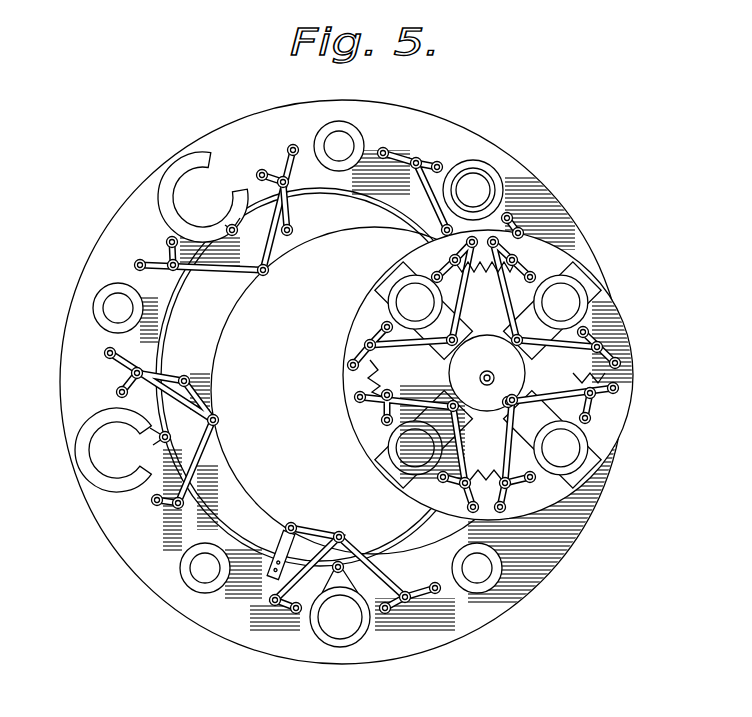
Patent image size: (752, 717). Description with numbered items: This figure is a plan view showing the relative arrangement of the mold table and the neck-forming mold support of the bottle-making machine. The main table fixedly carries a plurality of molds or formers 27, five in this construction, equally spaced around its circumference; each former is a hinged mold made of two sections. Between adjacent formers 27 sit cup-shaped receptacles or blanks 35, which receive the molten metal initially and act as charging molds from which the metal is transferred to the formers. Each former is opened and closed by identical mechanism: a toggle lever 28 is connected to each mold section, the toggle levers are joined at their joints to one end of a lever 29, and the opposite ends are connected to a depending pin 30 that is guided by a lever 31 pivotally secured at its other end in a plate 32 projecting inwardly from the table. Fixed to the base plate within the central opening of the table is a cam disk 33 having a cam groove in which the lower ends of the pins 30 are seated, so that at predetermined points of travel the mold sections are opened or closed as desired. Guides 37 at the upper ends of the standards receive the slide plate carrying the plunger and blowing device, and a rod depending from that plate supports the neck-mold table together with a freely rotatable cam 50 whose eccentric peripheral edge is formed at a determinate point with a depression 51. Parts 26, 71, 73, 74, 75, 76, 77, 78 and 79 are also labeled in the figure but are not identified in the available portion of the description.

The lever 26 is at (152, 263).
The mold (former) 27 is at (382, 672).
The toggle lever 28 is at (288, 148).
The lever 29 is at (249, 268).
The pin 30 is at (374, 390).
The lever 31 is at (282, 254).
The plate 32 is at (300, 215).
The cam disk 33 is at (193, 386).
The blank 35 is at (338, 122).
The guides 37 is at (212, 404).
The cam 50 is at (487, 373).
The depression 51 is at (492, 367).
The spring 71 is at (490, 419).
The link 73 is at (330, 245).
The disc 74 is at (612, 332).
The link 75 is at (385, 405).
The link 76 is at (394, 378).
The link 77 is at (390, 298).
The link 78 is at (352, 340).
The spring 79 is at (366, 378).